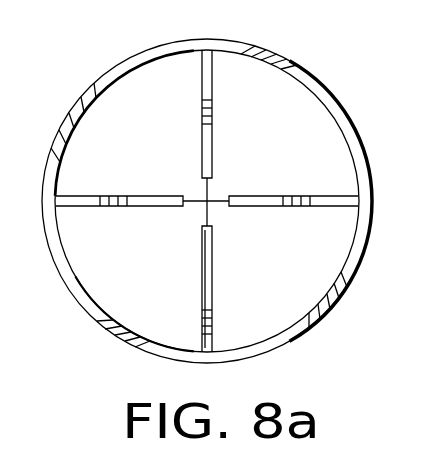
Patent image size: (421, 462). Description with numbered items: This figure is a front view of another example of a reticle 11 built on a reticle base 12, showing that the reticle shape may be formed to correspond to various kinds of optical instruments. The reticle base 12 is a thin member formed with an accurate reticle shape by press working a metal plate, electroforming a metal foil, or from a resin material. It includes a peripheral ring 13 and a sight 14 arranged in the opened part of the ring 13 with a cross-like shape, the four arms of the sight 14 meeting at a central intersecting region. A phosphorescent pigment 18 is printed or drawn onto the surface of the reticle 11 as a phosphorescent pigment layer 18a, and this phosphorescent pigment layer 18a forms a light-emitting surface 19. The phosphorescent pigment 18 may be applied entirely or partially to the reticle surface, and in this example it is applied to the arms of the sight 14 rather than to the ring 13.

The reticle 11 is at (291, 44).
The reticle base 12 is at (310, 73).
The peripheral ring 13 is at (336, 109).
The sight 14 is at (208, 200).
The phosphorescent pigment 18 is at (212, 240).
The phosphorescent pigment layer 18a is at (212, 268).
The light-emitting surface 19 is at (212, 295).